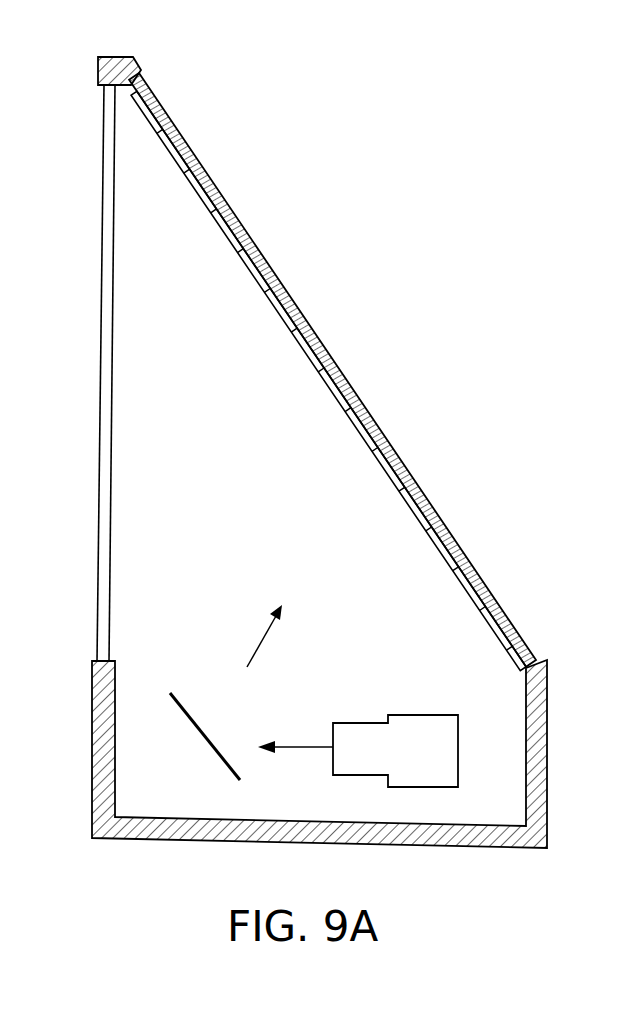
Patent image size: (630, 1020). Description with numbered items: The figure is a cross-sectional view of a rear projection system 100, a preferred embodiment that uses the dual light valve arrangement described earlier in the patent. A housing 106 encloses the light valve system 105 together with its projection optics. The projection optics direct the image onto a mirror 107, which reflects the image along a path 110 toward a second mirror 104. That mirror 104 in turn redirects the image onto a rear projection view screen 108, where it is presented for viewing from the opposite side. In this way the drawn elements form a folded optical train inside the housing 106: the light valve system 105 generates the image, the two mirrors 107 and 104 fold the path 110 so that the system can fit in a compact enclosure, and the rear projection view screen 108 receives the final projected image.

The rear projection system 100 is at (446, 276).
The mirror 104 is at (438, 513).
The light valve system 105 is at (443, 788).
The housing 106 is at (548, 752).
The mirror 107 is at (208, 748).
The rear projection view screen 108 is at (112, 463).
The path 110 is at (258, 643).